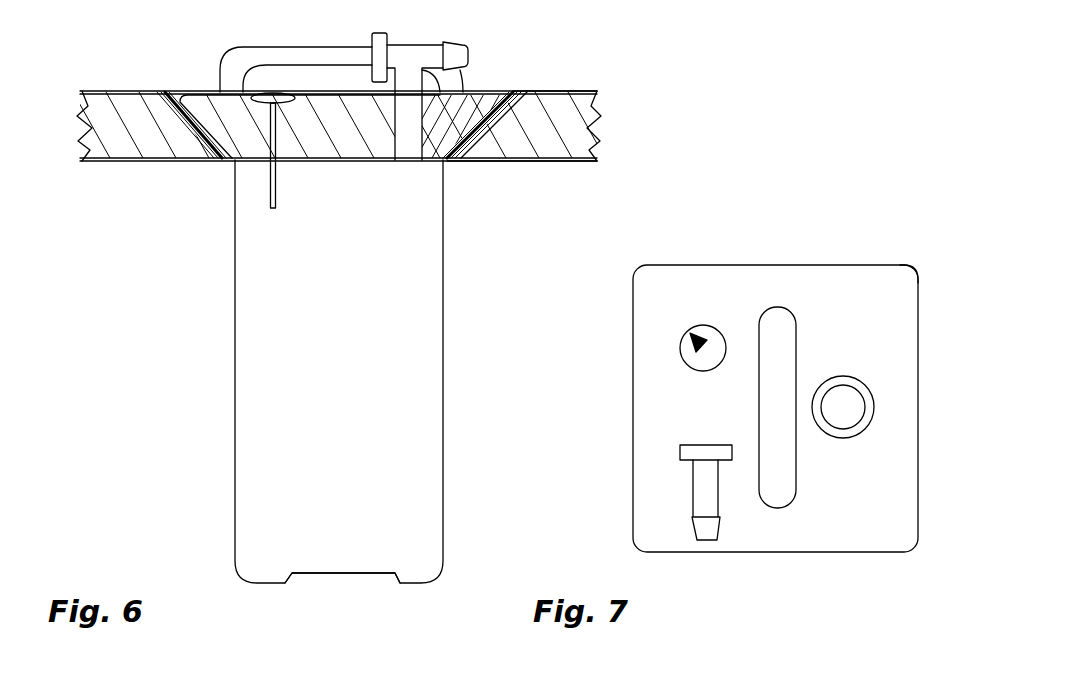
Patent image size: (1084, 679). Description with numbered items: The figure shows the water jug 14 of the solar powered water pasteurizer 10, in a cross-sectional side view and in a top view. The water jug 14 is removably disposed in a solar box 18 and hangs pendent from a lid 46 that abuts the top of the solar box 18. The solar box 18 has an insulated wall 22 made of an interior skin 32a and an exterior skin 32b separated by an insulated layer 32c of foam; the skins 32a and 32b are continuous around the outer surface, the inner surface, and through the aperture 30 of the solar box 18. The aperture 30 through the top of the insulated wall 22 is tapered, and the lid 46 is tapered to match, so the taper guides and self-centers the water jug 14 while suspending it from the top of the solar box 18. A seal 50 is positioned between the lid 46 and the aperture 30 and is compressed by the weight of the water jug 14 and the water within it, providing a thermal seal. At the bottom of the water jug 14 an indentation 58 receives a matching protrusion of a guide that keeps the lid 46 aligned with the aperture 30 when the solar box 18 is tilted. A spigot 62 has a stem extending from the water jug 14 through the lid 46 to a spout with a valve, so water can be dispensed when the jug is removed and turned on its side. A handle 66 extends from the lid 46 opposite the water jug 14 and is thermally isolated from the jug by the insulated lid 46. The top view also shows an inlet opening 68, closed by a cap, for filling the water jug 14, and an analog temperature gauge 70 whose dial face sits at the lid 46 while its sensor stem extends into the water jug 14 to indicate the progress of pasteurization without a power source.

In FIG. 6, the solar powered water pasteurizer 10 is at (68, 178).
In FIG. 6, the water jug 14 is at (248, 317).
In FIG. 7, the water jug 14 is at (890, 533).
In FIG. 6, the solar box 18 is at (105, 127).
In FIG. 6, the insulated wall 22 is at (570, 125).
In FIG. 6, the aperture 30 is at (513, 92).
In FIG. 6, the interior skin 32a is at (490, 160).
In FIG. 6, the exterior skin 32b is at (597, 92).
In FIG. 6, the insulated layer 32c is at (530, 145).
In FIG. 6, the lid 46 is at (213, 92).
In FIG. 7, the lid 46 is at (797, 532).
In FIG. 6, the seal 50 is at (190, 130).
In FIG. 6, the indentation 58 is at (323, 575).
In FIG. 6, the spigot 62 is at (413, 55).
In FIG. 7, the spigot 62 is at (701, 488).
In FIG. 6, the handle 66 is at (305, 47).
In FIG. 7, the handle 66 is at (781, 315).
In FIG. 7, the inlet opening 68 is at (846, 395).
In FIG. 6, the analog temperature gauge 70 is at (273, 92).
In FIG. 7, the analog temperature gauge 70 is at (708, 328).